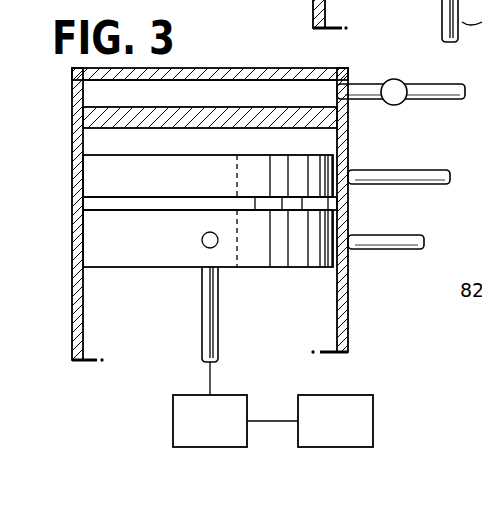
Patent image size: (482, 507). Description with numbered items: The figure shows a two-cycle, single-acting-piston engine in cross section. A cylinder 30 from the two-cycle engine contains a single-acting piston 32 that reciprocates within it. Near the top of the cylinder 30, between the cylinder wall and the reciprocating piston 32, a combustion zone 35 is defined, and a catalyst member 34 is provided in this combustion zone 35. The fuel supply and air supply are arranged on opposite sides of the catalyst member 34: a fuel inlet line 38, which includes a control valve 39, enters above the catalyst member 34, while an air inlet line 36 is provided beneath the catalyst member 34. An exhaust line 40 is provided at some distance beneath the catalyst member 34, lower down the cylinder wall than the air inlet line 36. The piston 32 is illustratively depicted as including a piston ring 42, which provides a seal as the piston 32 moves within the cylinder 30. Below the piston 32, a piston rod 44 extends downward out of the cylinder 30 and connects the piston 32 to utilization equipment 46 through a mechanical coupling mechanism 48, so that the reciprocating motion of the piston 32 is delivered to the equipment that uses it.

The cylinder 30 is at (350, 304).
The single-acting piston 32 is at (103, 242).
The catalyst member 34 is at (90, 118).
The combustion zone 35 is at (214, 103).
The air inlet line 36 is at (393, 172).
The fuel inlet line 38 is at (368, 88).
The control valve 39 is at (404, 103).
The exhaust line 40 is at (393, 240).
The piston ring 42 is at (95, 203).
The piston rod 44 is at (219, 325).
The utilization equipment 46 is at (374, 399).
The mechanical coupling mechanism 48 is at (250, 398).